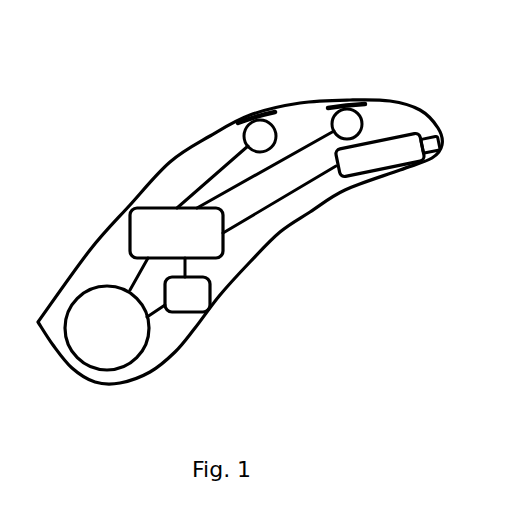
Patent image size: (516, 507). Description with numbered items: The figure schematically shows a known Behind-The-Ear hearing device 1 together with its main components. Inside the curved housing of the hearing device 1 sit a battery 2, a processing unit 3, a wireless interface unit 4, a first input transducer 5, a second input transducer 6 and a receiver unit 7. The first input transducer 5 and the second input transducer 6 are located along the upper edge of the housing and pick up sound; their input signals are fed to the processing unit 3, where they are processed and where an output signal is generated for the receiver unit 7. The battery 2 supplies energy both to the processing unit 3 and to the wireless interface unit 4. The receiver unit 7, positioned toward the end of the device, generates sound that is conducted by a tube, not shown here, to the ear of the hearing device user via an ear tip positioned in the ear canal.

The BTE hearing device 1 is at (412, 62).
The battery 2 is at (88, 352).
The processing unit 3 is at (148, 223).
The wireless interface unit 4 is at (197, 298).
The first input transducer 5 is at (257, 132).
The second input transducer 6 is at (352, 118).
The receiver unit 7 is at (383, 155).